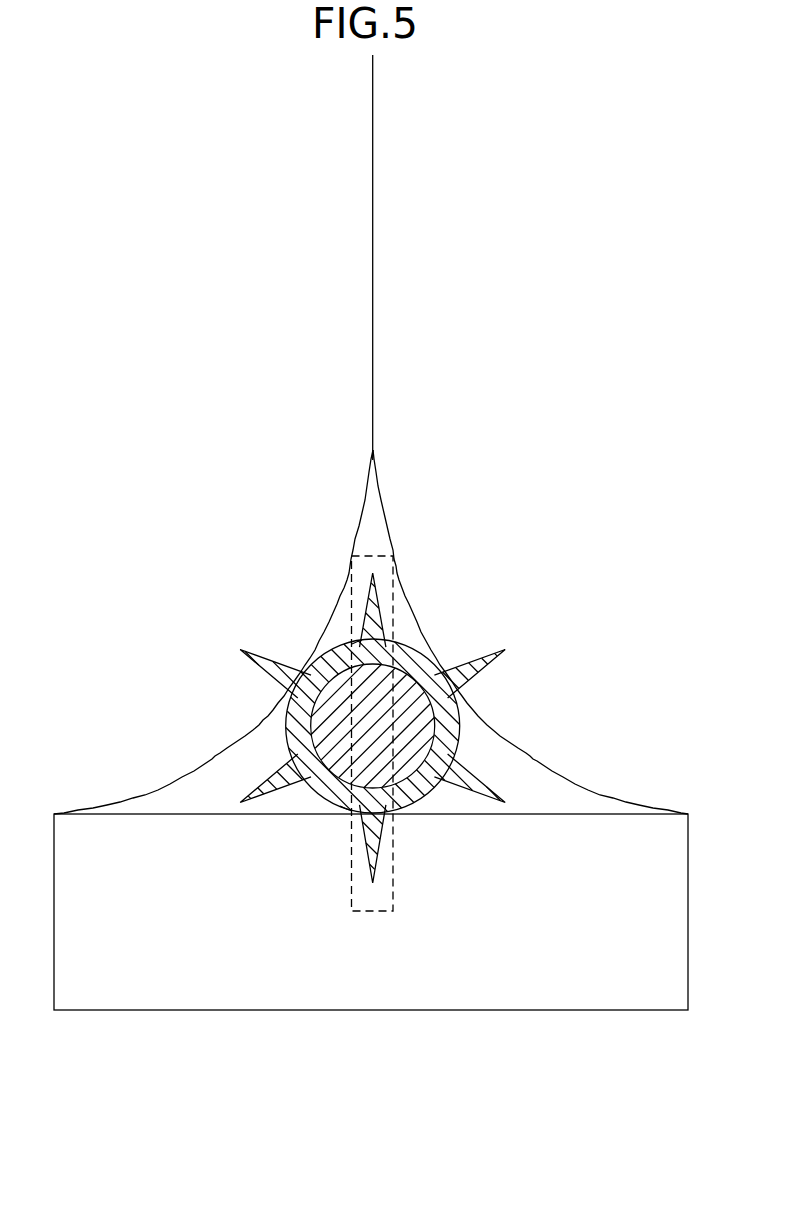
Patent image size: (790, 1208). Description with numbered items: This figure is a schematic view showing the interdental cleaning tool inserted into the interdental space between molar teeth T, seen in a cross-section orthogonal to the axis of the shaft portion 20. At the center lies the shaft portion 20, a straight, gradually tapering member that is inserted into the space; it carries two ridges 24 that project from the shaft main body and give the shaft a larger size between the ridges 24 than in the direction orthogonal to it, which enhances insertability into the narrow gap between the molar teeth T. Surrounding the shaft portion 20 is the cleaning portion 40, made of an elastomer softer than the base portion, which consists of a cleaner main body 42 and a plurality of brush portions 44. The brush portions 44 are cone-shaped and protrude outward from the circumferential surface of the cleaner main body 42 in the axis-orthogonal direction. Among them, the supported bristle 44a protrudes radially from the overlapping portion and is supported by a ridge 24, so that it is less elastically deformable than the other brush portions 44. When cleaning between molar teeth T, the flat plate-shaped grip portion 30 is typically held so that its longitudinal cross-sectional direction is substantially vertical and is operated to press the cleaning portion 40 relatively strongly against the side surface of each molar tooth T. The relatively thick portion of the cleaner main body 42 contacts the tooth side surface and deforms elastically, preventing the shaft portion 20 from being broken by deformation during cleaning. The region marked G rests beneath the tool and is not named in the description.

The shaft portion 20 is at (403, 727).
The ridge 24 is at (358, 641).
The grip portion 30 is at (377, 912).
The cleaning portion 40 is at (438, 727).
The cleaner main body 42 is at (447, 723).
The brush portion 44 is at (473, 670).
The supported bristle 44a is at (373, 628).
The molar tooth T is at (195, 378).
The ground G is at (260, 961).